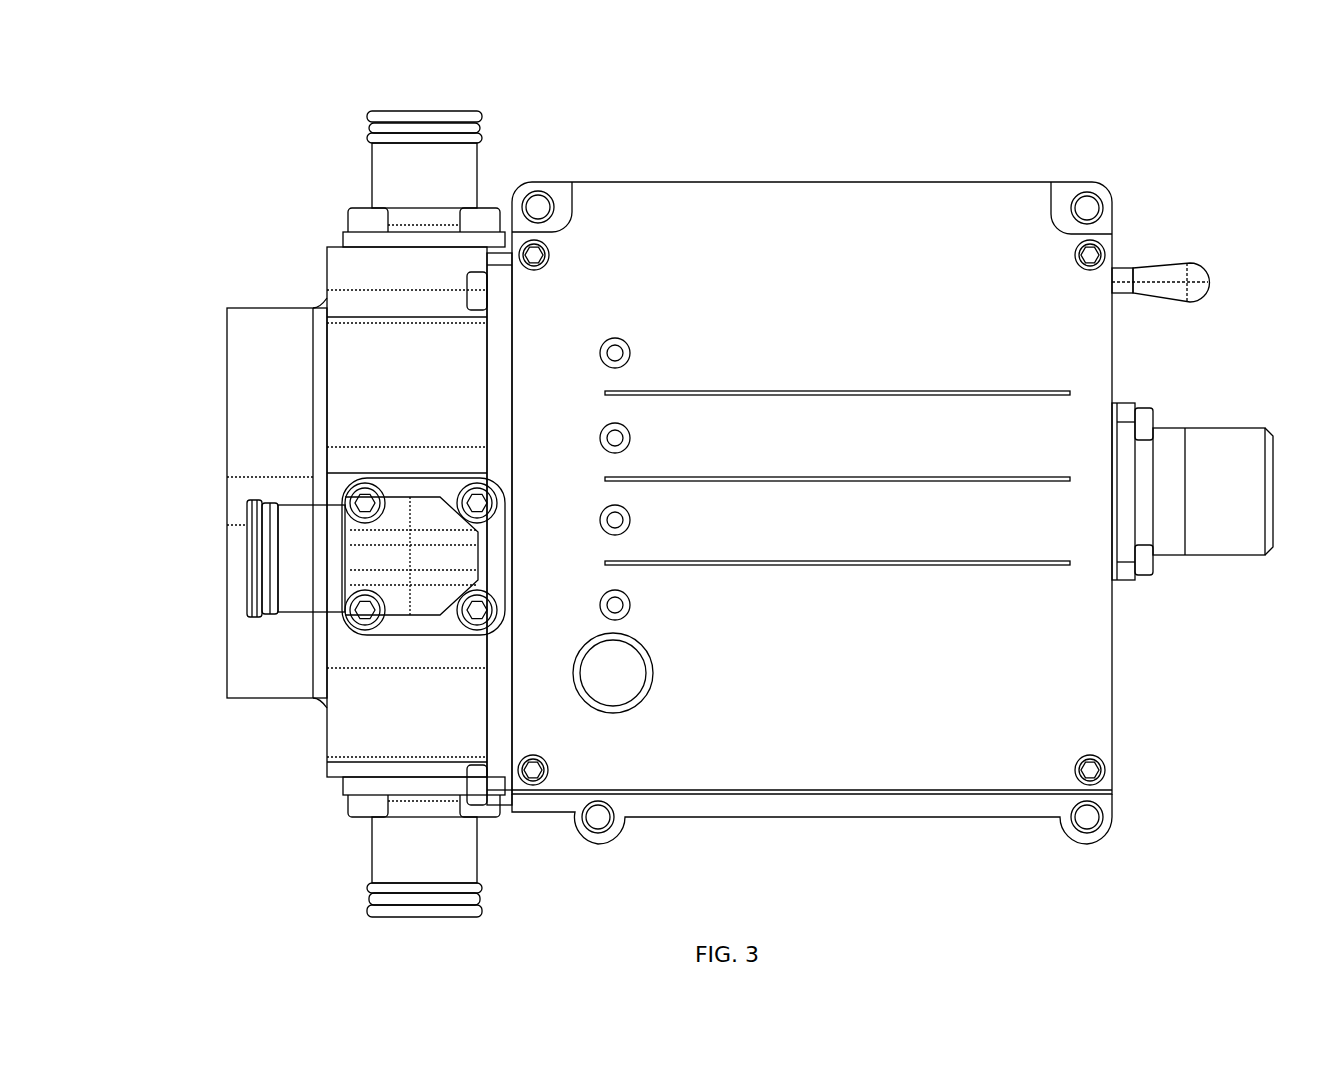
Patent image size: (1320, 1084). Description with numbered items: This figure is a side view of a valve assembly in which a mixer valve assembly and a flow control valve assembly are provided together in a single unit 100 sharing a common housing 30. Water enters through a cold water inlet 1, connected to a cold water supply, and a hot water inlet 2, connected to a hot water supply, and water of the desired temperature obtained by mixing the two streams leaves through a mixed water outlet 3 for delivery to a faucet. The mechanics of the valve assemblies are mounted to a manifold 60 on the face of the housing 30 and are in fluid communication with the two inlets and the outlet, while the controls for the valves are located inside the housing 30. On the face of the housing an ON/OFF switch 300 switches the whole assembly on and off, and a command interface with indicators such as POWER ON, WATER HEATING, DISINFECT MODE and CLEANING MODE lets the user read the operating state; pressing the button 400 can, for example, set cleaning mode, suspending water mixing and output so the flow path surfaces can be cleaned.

The single unit 100 is at (790, 140).
The housing 30 is at (937, 200).
The ON/OFF switch 300 is at (1199, 271).
The button 400 is at (620, 680).
The mixed water outlet 3 is at (428, 108).
The manifold 60 is at (357, 357).
The hot water inlet 2 is at (247, 562).
The cold water inlet 1 is at (448, 915).